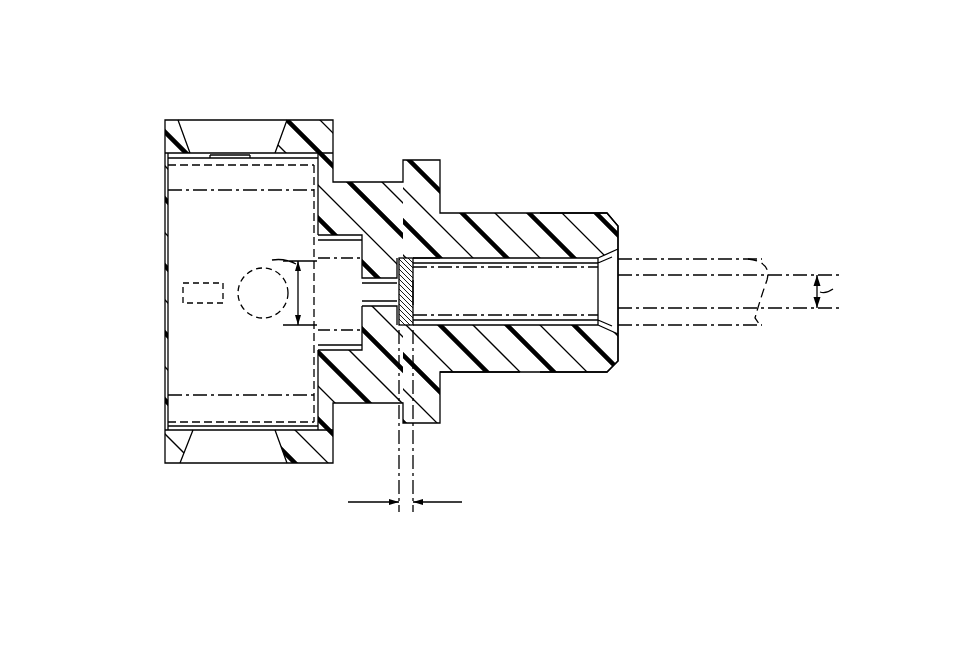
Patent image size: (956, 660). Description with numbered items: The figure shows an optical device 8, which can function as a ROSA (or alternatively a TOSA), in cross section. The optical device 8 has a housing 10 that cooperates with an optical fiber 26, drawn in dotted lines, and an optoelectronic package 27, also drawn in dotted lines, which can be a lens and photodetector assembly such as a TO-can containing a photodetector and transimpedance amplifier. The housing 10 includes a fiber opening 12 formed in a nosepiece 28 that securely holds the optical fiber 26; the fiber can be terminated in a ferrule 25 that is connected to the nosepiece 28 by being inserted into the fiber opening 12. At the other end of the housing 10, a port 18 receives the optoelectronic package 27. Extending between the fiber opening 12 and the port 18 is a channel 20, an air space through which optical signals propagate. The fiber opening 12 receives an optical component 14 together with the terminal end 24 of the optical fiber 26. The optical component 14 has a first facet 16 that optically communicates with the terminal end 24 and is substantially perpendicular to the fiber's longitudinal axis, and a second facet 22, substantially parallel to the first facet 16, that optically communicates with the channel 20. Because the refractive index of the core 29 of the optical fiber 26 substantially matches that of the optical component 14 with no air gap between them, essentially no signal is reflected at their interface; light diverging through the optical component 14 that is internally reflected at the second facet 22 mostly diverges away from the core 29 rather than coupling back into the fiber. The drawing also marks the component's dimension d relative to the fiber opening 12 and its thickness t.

The optical device 8 is at (230, 96).
The housing 10 is at (355, 182).
The fiber opening 12 is at (617, 322).
The optical component 14 is at (424, 262).
The first facet 16 is at (418, 292).
The port 18 is at (187, 204).
The channel 20 is at (362, 285).
The second facet 22 is at (398, 262).
The terminal end 24 is at (470, 352).
The ferrule 25 is at (622, 268).
The optical fiber 26 is at (733, 258).
The optoelectronic package 27 is at (165, 172).
The nosepiece 28 is at (565, 214).
The core 29 is at (722, 297).